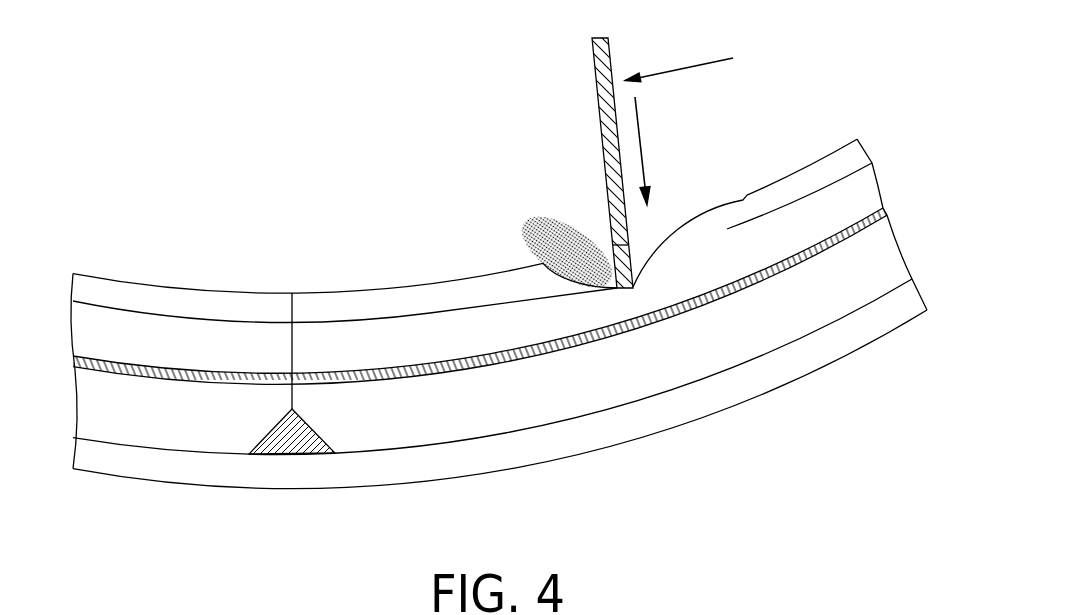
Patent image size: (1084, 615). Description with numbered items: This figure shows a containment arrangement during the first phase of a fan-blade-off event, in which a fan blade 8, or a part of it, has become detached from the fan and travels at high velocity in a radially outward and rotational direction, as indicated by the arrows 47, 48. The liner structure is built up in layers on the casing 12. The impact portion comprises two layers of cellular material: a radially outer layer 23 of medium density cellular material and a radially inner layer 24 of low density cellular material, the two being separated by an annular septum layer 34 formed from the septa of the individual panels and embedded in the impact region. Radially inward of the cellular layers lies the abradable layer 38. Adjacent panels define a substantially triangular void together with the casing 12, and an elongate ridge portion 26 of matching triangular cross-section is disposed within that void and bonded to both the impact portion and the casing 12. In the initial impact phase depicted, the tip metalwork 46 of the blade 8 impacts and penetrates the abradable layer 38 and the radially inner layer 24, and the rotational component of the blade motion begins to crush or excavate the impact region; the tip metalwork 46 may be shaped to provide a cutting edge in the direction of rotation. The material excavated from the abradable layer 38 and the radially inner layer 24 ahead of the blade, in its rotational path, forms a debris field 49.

The fan blade 8 is at (598, 97).
The casing 12 is at (710, 392).
The radially outer layer 23 is at (463, 425).
The radially inner layer 24 is at (318, 343).
The ridge portion 26 is at (288, 458).
The septum layer 34 is at (543, 354).
The abradable layer 38 is at (392, 302).
The tip metalwork 46 is at (632, 268).
The arrow 47 is at (642, 142).
The arrow 48 is at (688, 68).
The debris field 49 is at (540, 223).